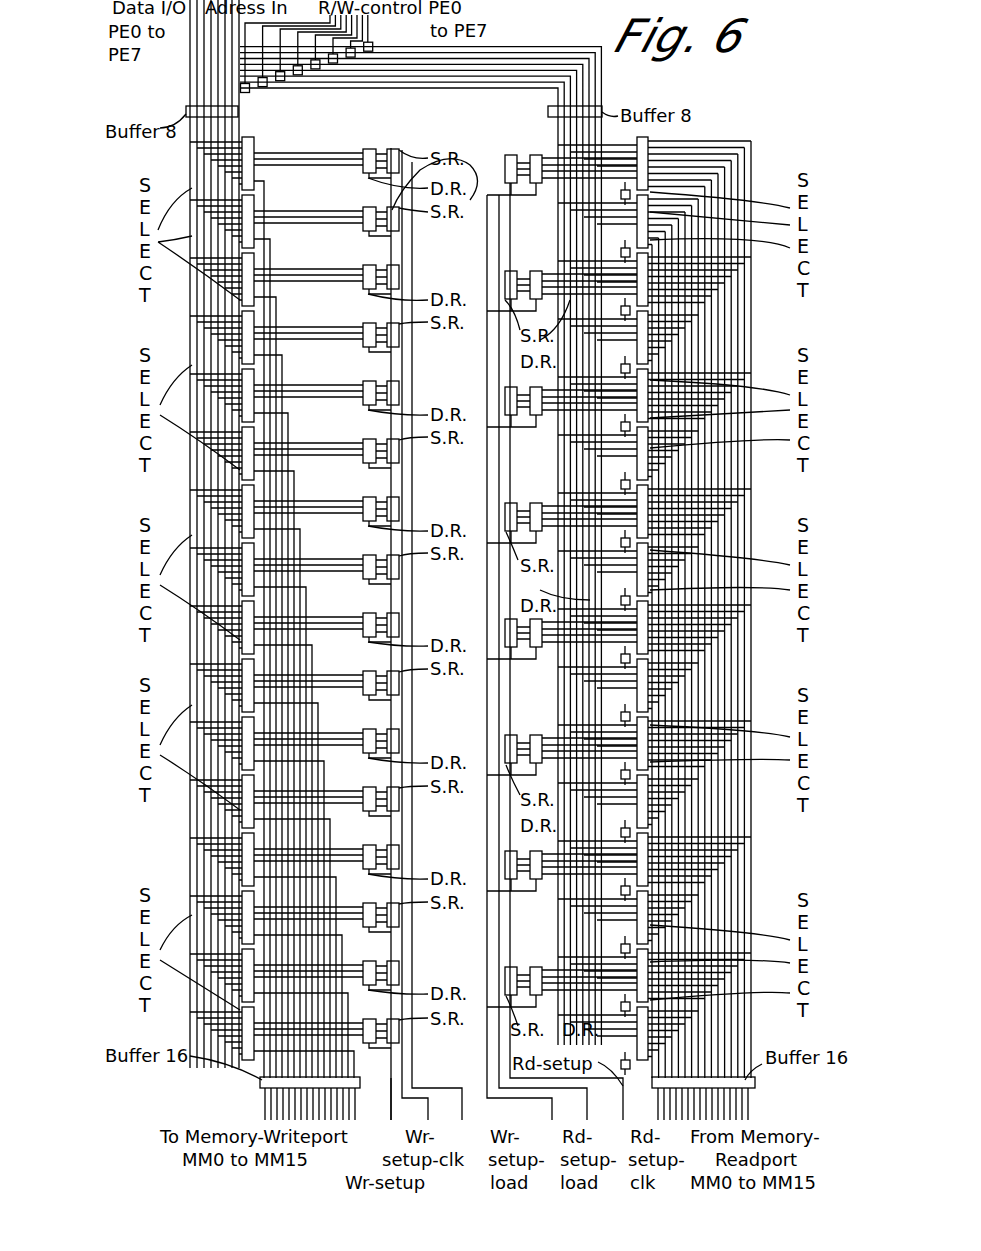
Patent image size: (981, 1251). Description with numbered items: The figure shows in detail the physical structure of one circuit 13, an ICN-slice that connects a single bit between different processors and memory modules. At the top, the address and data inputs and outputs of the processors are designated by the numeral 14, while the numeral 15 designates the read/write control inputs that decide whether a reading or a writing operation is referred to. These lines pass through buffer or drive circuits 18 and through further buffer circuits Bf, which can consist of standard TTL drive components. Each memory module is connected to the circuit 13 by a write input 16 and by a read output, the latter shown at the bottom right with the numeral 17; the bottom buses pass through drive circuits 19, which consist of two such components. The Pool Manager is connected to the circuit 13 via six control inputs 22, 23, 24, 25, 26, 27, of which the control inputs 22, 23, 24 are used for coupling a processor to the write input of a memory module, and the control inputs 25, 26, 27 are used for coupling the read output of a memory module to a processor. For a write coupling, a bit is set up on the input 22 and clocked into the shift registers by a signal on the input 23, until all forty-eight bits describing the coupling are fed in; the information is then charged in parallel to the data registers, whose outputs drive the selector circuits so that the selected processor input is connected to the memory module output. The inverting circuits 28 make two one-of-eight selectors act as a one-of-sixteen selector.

The circuit 13 is at (400, 121).
The I/O terminal 14 is at (190, 54).
The R/W control input 15 is at (360, 20).
The write input 16 is at (265, 1113).
The memory readport lines 17 is at (750, 1114).
The buffer circuit 18 is at (238, 111).
The drive circuit 19 is at (260, 1083).
The control input 22 is at (372, 1168).
The control input 23 is at (435, 1098).
The control input 24 is at (490, 1150).
The control input 25 is at (565, 1142).
The control input 26 is at (630, 1150).
The control input 27 is at (633, 1098).
The inverting circuit 28 is at (553, 545).
The buffer circuit Bf is at (348, 62).